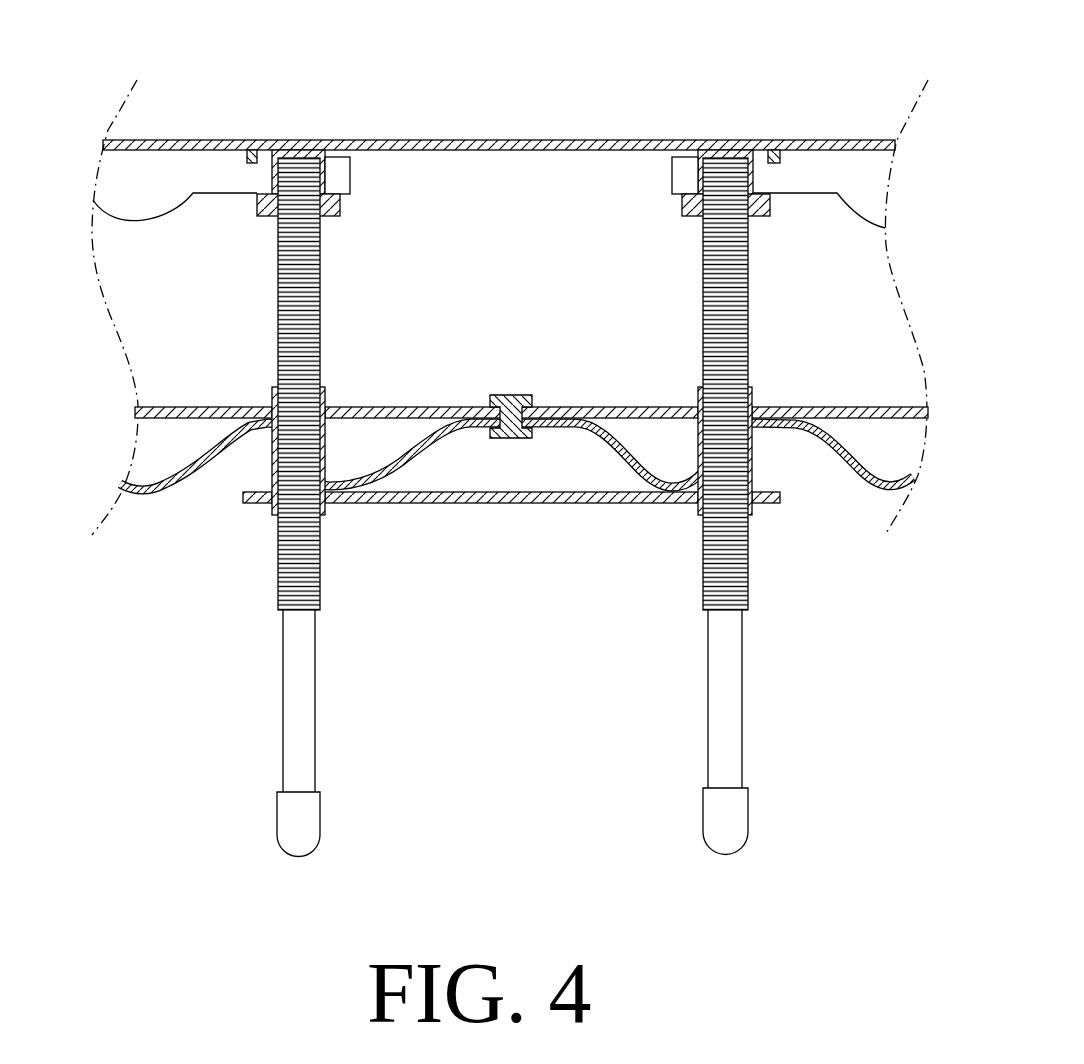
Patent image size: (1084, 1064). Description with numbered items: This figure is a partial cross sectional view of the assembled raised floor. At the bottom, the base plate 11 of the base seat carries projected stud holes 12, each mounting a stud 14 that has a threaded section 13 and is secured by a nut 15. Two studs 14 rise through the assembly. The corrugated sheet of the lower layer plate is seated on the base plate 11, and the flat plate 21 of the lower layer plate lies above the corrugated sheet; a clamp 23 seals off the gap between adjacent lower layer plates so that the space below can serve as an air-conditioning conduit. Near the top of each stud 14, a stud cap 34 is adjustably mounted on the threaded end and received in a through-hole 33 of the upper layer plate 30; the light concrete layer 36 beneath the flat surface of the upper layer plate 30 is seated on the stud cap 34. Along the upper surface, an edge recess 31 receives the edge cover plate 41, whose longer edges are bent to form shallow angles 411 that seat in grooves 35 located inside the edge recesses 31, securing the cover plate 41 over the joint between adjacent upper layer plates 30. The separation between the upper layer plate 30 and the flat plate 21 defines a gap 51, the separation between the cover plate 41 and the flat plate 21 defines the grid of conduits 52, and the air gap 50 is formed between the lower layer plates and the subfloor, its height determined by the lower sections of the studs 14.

The base plate 11 is at (583, 495).
The stud hole 12 is at (753, 460).
The threaded section 13 is at (320, 285).
The stud 14 is at (725, 727).
The nut 15 is at (322, 515).
The flat plate 21 is at (795, 410).
The clamp 23 is at (530, 398).
The upper layer plate 30 is at (833, 142).
The edge recess 31 is at (680, 155).
The through-hole 33 is at (328, 153).
The stud cap 34 is at (819, 245).
The groove 35 is at (256, 150).
The light concrete layer 36 is at (200, 168).
The edge cover plate 41 is at (405, 140).
The shallow angle 411 is at (777, 152).
The air gap 50 is at (165, 629).
The gap 51 is at (193, 303).
The grid of conduits 52 is at (517, 288).